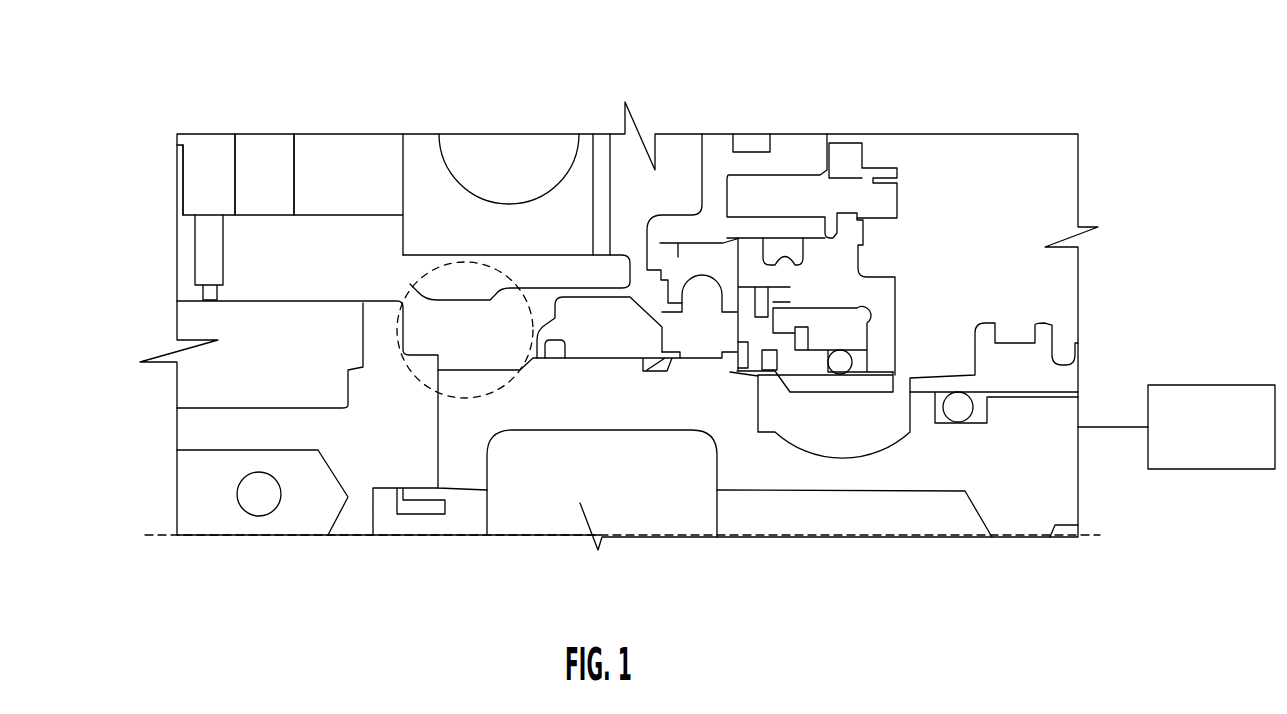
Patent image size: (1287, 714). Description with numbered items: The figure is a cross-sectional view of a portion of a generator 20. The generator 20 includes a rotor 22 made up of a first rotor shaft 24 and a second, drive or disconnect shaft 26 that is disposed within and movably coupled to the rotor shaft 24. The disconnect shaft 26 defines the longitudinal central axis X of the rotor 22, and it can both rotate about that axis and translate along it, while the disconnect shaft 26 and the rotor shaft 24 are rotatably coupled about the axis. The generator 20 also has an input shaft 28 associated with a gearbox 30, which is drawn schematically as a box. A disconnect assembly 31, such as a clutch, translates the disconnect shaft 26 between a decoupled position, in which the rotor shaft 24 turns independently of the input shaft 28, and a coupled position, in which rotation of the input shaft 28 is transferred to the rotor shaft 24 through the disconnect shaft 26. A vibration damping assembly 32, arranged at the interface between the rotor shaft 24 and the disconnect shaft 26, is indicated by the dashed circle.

The generator 20 is at (1017, 88).
The rotor 22 is at (183, 169).
The rotor shaft 24 is at (263, 222).
The disconnect shaft 26 is at (192, 425).
The input shaft 28 is at (882, 480).
The gearbox 30 is at (1222, 447).
The disconnect assembly 31 is at (620, 332).
The vibration damping assembly 32 is at (435, 326).